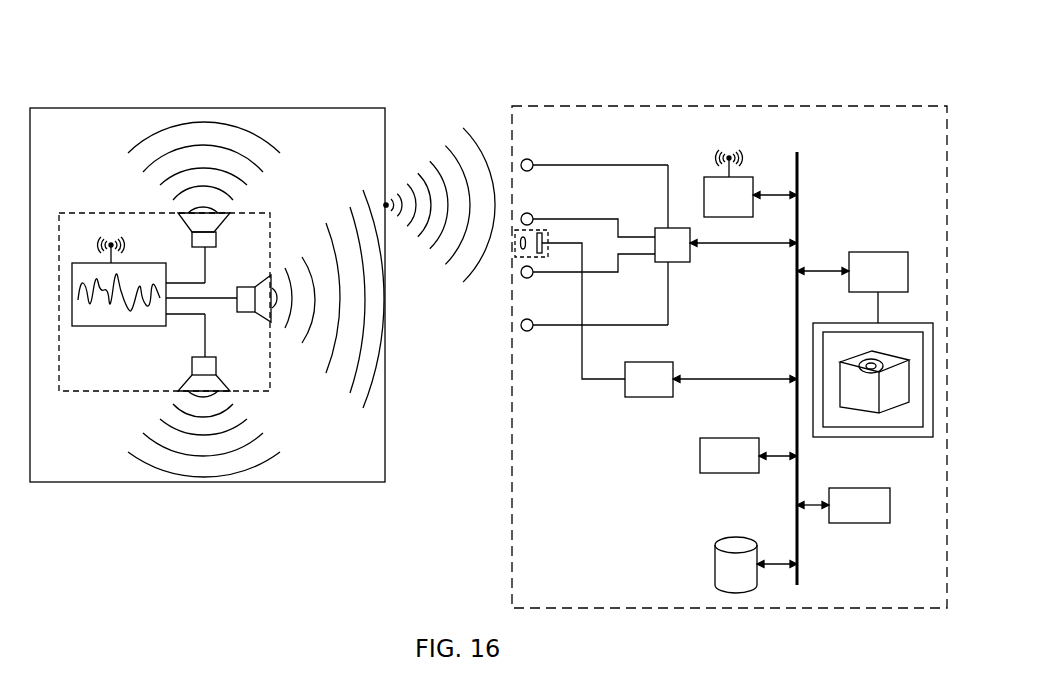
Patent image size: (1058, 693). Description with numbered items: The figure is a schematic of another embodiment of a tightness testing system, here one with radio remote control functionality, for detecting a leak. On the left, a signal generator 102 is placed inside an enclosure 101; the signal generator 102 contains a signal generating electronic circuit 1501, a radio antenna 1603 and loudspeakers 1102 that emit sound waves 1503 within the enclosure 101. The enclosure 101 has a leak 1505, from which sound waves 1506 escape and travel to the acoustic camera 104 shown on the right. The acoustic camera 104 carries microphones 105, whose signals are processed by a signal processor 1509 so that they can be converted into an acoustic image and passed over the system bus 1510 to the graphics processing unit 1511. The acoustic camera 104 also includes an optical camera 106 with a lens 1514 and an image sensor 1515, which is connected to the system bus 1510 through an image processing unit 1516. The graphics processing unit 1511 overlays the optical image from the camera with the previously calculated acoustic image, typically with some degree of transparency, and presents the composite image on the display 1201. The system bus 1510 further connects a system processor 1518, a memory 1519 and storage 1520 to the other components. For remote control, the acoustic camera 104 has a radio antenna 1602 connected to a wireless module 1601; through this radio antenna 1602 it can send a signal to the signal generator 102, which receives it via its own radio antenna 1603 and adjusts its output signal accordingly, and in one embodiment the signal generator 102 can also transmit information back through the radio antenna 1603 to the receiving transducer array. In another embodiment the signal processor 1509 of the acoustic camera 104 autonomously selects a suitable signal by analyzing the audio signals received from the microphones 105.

The enclosure 101 is at (58, 484).
The signal generator 102 is at (70, 393).
The acoustic camera 104 is at (650, 104).
The microphones 105 is at (531, 212).
The optical camera 106 is at (512, 260).
The loudspeakers 1102 is at (256, 316).
The display 1201 is at (870, 438).
The signal generating electronic circuit 1501 is at (113, 328).
The sound waves 1503 is at (233, 197).
The leak 1505 is at (388, 210).
The sound waves 1506 is at (468, 126).
The signal processor 1509 is at (678, 265).
The system bus 1510 is at (799, 162).
The graphics processing unit 1511 is at (881, 250).
The lens 1514 is at (515, 256).
The image sensor 1515 is at (541, 232).
The image processing unit 1516 is at (645, 399).
The system processor 1518 is at (745, 475).
The memory 1519 is at (875, 525).
The storage 1520 is at (714, 567).
The wireless module 1601 is at (755, 175).
The radio antenna 1602 is at (729, 156).
The radio antenna 1603 is at (108, 240).